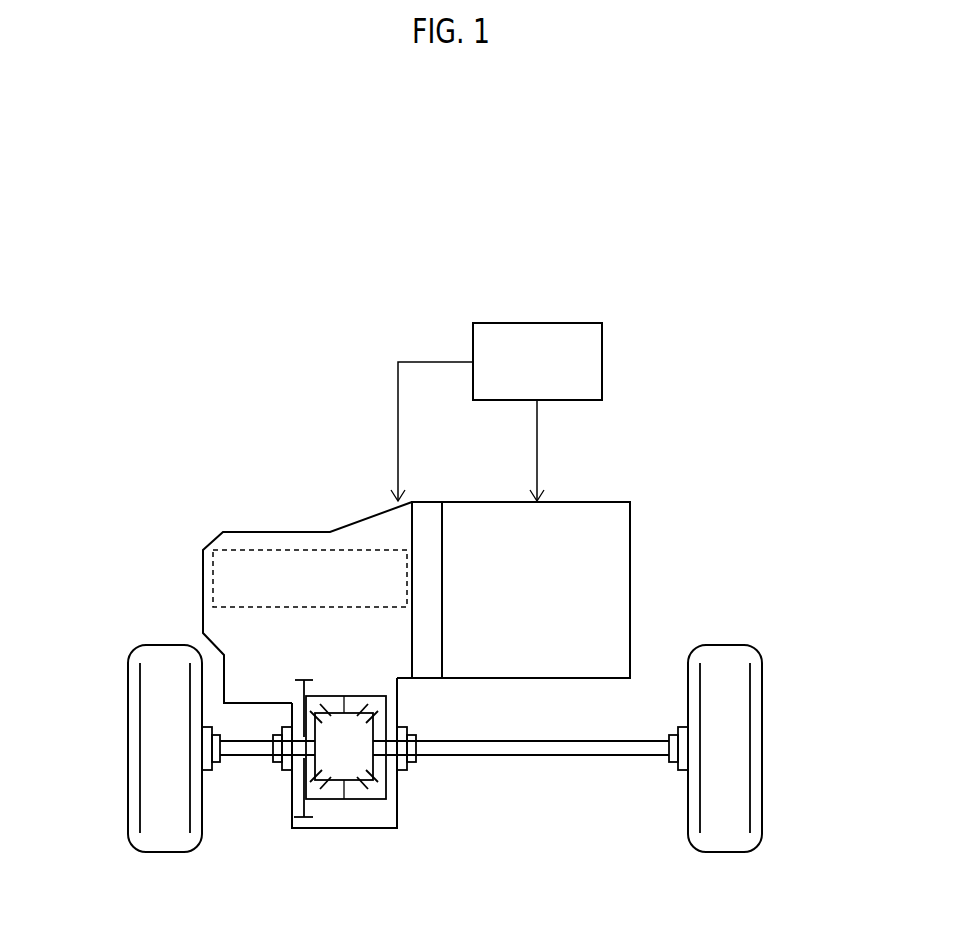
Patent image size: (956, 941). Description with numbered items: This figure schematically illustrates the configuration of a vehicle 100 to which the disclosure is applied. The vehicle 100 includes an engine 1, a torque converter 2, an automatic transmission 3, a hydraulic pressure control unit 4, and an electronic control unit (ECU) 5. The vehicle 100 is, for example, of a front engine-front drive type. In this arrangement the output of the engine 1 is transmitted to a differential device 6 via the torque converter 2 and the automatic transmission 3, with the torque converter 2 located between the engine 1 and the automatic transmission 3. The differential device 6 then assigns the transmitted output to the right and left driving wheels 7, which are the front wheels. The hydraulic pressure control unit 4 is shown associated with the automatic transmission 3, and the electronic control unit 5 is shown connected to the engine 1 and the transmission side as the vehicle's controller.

The engine 1 is at (632, 541).
The torque converter 2 is at (428, 518).
The automatic transmission 3 is at (222, 619).
The hydraulic pressure control unit 4 is at (213, 578).
The electronic control unit (ECU) 5 is at (565, 322).
The differential device 6 is at (336, 812).
The driving wheels (front wheels) 7 is at (128, 700).
The vehicle 100 is at (674, 437).